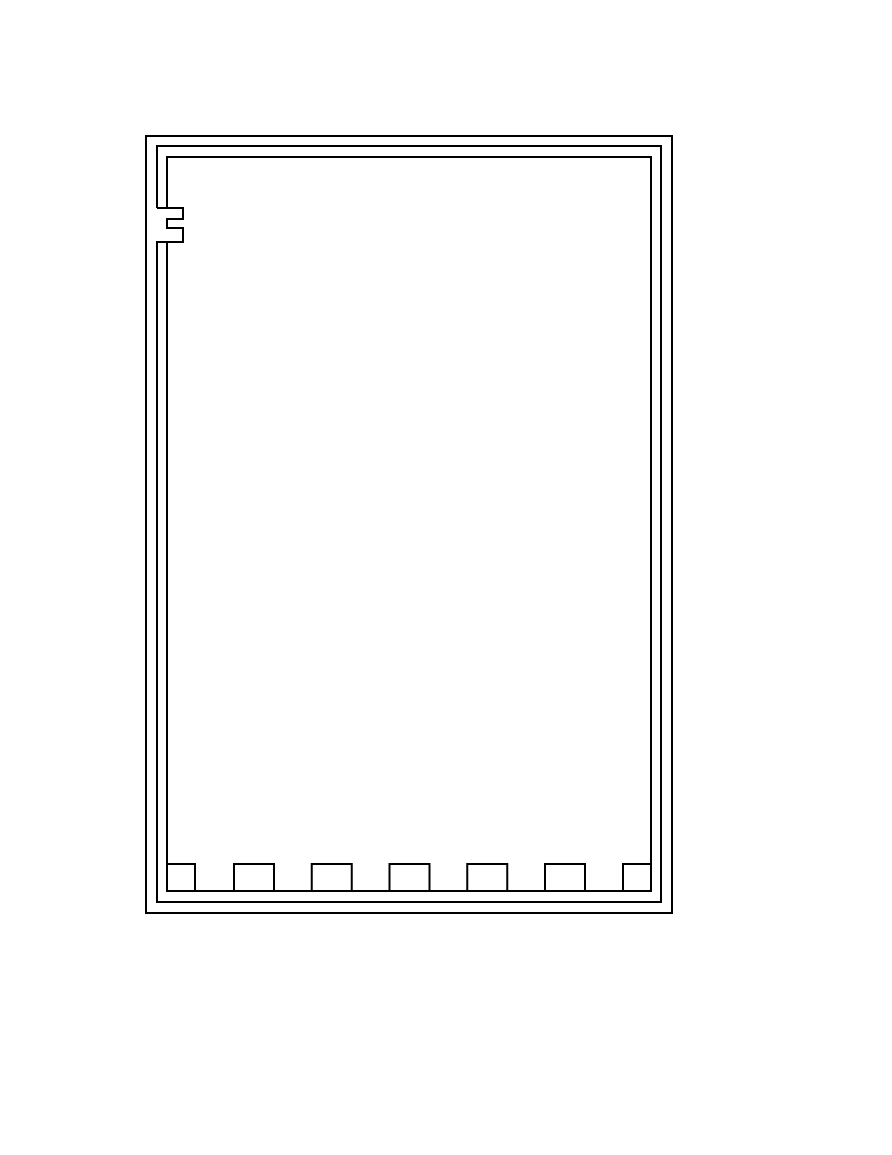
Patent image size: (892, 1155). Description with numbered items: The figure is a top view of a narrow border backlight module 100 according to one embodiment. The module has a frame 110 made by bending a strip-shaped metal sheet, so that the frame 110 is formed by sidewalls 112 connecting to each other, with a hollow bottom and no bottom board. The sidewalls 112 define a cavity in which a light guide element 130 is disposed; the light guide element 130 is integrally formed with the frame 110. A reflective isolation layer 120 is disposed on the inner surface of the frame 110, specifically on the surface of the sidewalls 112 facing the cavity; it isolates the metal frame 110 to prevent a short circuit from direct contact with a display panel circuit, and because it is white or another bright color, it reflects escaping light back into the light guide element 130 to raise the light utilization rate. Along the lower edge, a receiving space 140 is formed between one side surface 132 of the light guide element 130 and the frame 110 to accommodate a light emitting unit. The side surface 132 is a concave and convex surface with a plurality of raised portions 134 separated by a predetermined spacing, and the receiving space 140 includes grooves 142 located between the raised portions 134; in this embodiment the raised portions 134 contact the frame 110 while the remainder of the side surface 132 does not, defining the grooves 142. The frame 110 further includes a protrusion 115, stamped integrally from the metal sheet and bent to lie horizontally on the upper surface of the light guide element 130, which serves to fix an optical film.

The narrow border backlight module 100 is at (135, 75).
The frame 110 is at (204, 134).
The sidewalls 112 is at (667, 211).
The protrusion 115 is at (176, 206).
The reflective isolation layer 120 is at (544, 155).
The light guide element 130 is at (636, 499).
The side surface 132 is at (184, 864).
The raised portions 134 is at (215, 892).
The receiving space 140 is at (660, 877).
The grooves 142 is at (565, 892).